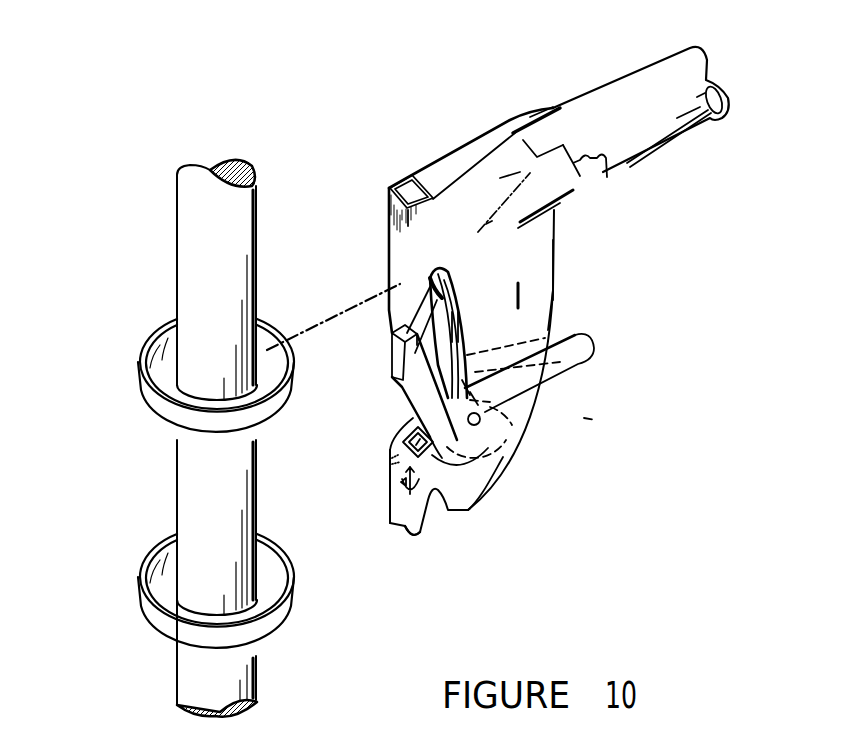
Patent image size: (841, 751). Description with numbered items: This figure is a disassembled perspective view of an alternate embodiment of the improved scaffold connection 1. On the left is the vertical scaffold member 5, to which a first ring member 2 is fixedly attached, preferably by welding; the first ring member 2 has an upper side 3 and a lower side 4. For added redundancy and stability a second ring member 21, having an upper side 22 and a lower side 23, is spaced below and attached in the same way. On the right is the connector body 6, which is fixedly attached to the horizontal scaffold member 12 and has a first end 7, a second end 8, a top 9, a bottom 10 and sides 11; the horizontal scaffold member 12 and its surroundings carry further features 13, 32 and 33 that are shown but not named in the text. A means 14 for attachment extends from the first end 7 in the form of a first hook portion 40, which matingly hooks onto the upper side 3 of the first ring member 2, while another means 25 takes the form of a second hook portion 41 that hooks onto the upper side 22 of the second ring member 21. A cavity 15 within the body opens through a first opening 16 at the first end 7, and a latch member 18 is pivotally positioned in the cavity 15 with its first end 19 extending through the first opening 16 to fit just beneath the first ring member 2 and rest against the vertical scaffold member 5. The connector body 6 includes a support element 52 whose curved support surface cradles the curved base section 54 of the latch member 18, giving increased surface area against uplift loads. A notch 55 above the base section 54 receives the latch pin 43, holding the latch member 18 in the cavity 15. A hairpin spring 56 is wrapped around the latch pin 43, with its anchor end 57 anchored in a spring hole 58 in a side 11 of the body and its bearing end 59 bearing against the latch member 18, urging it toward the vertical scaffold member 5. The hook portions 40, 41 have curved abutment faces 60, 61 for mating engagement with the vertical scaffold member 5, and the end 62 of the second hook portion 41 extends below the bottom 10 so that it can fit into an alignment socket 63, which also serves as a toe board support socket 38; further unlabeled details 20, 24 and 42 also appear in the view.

The scaffold connection 1 is at (507, 312).
The first ring member 2 is at (187, 372).
The upper side 3 is at (263, 329).
The lower side 4 is at (266, 434).
The vertical scaffold member 5 is at (183, 485).
The connector body 6 is at (494, 341).
The first end 7 is at (393, 413).
The second end 8 is at (569, 241).
The top 9 is at (482, 133).
The bottom 10 is at (475, 512).
The sides 11 is at (537, 312).
The horizontal scaffold member 12 is at (685, 135).
The tube 13 is at (648, 113).
The means for attachment 14 is at (380, 227).
The cavity 15 is at (454, 333).
The first opening 16 is at (462, 345).
The latch member 18 is at (448, 293).
The first end 19 is at (392, 342).
The lever 20 is at (594, 353).
The second ring member 21 is at (199, 580).
The upper side 22 is at (268, 556).
The lower side 23 is at (266, 651).
The lower edge 24 is at (385, 512).
The means for attachment / resilient means 25 is at (547, 362).
The slot 32 is at (533, 113).
The notch 33 is at (592, 172).
The toe board support socket 38 is at (391, 184).
The first hook portion 40 is at (388, 274).
The second hook portion 41 is at (404, 515).
The detent 42 is at (558, 297).
The latch pin 43 is at (480, 424).
The support element 52 is at (438, 462).
The curved base section 54 is at (503, 478).
The notch 55 is at (424, 396).
The hairpin spring 56 is at (477, 400).
The anchor end 57 is at (596, 420).
The spring hole 58 is at (480, 390).
The bearing end 59 is at (463, 364).
The curved abutment face 60 is at (400, 223).
The curved abutment face 61 is at (423, 460).
The end 62 is at (413, 531).
The alignment socket 63 is at (423, 161).